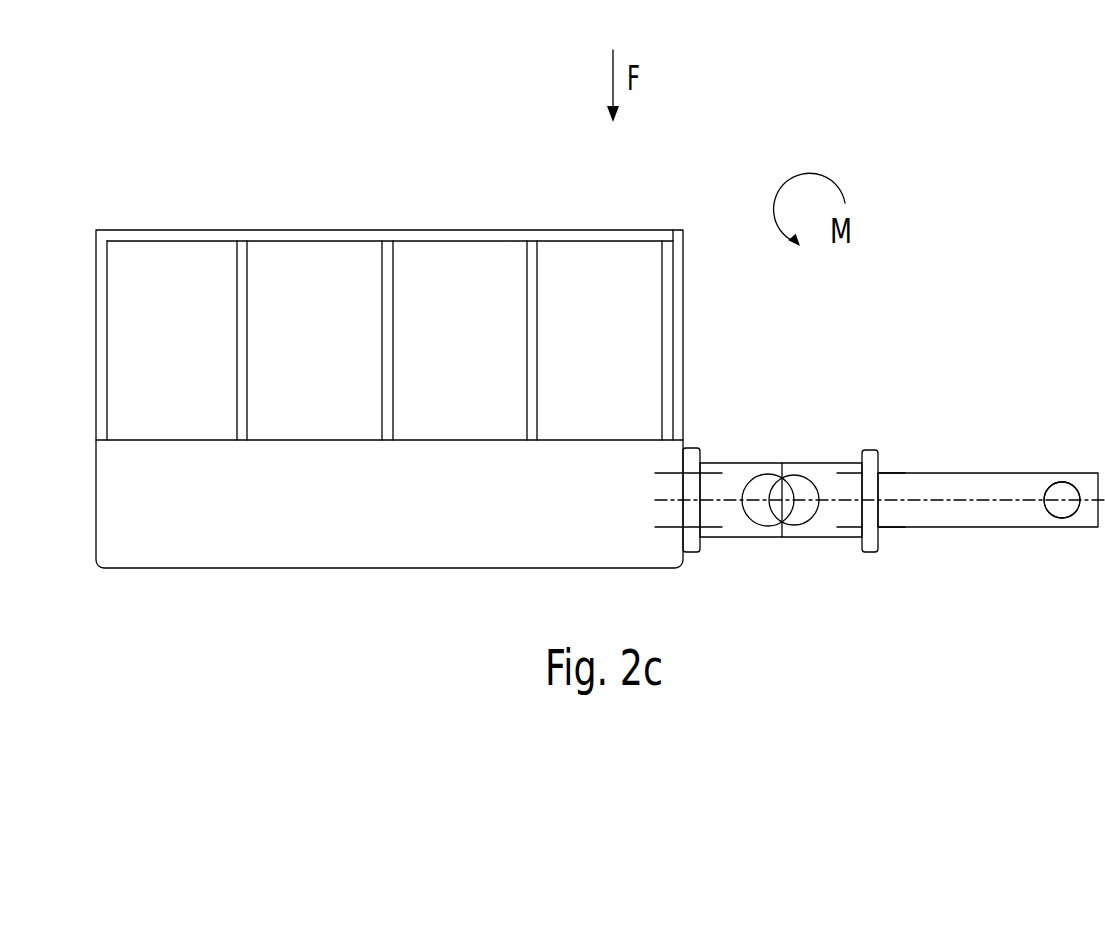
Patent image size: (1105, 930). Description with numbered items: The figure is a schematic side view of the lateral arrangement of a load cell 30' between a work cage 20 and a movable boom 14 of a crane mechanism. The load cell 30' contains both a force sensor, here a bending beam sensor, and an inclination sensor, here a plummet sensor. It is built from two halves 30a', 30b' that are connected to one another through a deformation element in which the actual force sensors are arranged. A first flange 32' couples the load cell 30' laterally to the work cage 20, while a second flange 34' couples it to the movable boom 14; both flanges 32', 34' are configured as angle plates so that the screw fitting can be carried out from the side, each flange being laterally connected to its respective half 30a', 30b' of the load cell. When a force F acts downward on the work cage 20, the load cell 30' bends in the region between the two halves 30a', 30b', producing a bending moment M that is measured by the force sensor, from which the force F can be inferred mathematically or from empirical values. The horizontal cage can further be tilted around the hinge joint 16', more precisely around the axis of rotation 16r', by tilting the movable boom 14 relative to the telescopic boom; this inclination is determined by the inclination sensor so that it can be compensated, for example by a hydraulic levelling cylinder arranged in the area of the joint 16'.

The work cage 20 is at (362, 230).
The first flange 32' is at (714, 434).
The load cell 30' is at (781, 546).
The first half of the load cell 30a' is at (760, 449).
The second half of the load cell 30b' is at (807, 448).
The second flange 34' is at (892, 434).
The movable boom 14 is at (1005, 472).
The hinge joint 16' is at (1036, 555).
The axis of rotation 16r' is at (1060, 555).